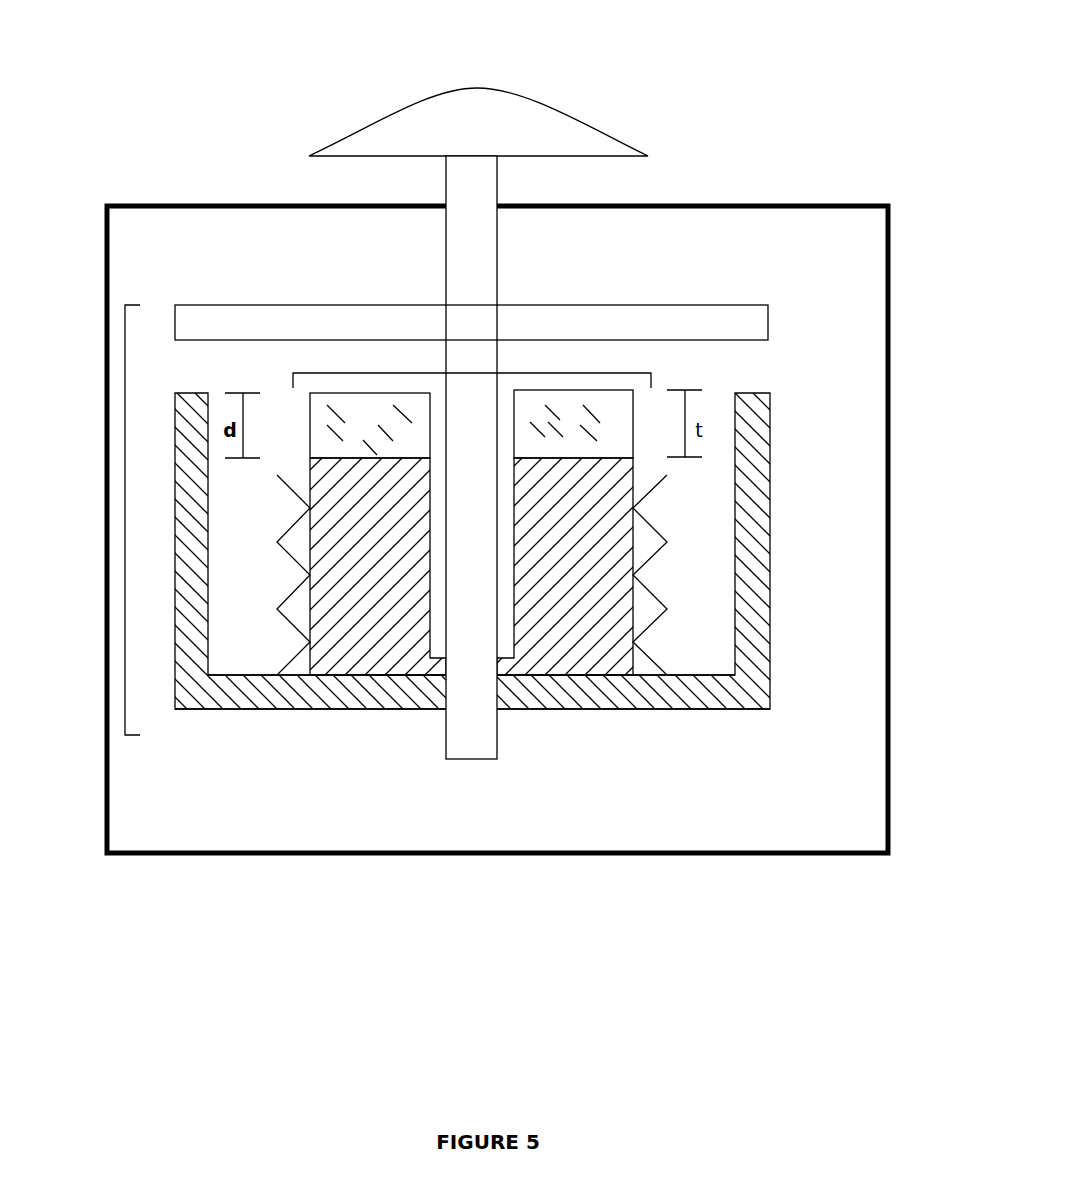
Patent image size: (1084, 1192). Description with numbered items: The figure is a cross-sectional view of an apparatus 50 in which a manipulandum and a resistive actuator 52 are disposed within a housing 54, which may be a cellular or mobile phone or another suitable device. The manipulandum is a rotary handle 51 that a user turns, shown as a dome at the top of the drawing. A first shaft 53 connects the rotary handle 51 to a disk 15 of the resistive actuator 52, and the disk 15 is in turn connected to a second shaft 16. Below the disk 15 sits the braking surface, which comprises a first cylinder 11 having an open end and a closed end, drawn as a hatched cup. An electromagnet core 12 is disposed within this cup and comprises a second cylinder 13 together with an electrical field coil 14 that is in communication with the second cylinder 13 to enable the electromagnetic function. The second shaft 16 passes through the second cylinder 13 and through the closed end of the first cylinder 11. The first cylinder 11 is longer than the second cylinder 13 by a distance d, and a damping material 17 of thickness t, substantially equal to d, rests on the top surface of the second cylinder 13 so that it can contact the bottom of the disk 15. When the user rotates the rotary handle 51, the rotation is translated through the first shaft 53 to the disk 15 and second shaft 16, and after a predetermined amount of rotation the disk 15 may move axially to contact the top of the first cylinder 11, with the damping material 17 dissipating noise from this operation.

The apparatus 50 is at (140, 88).
The rotary handle 51 is at (548, 107).
The first shaft 53 is at (480, 240).
The disk 15 is at (700, 323).
The damping material 17 is at (562, 405).
The electromagnet core 12 is at (581, 373).
The second cylinder 13 is at (565, 657).
The first cylinder 11 is at (243, 688).
The electrical field coil 14 is at (753, 555).
The second shaft 16 is at (463, 738).
The resistive actuator 52 is at (125, 505).
The housing 54 is at (157, 856).